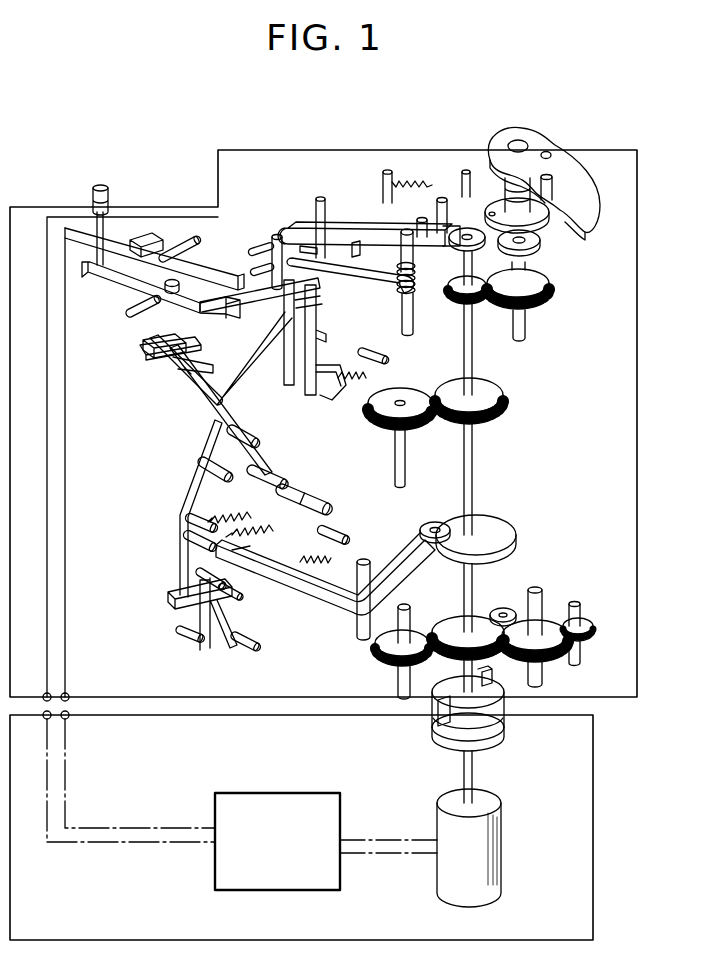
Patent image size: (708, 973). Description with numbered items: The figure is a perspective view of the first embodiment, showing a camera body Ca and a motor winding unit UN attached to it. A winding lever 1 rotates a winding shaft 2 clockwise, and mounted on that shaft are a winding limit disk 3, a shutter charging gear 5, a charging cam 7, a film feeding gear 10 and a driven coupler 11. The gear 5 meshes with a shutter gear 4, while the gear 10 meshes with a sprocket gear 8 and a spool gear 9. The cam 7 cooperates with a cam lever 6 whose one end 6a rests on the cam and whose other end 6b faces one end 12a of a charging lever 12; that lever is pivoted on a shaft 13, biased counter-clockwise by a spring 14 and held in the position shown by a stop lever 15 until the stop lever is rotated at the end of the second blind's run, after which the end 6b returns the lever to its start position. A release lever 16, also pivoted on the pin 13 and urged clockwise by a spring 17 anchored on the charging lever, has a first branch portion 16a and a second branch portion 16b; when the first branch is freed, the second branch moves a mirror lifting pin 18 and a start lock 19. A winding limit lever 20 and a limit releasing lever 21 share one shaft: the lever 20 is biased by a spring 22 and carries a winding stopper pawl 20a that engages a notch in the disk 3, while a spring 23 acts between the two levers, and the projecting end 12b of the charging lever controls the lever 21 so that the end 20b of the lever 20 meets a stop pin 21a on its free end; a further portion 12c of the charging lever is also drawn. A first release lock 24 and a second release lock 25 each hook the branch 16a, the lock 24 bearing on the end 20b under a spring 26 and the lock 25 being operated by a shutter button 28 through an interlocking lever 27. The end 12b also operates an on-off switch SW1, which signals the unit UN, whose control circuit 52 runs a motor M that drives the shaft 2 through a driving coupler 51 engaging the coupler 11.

The winding lever 1 is at (587, 203).
The winding shaft 2 is at (467, 355).
The winding limit disk 3 is at (458, 242).
The shutter gear 4 is at (412, 410).
The shutter charging gear 5 is at (490, 400).
The cam lever 6 is at (337, 595).
The one end of cam lever 6a is at (427, 532).
The other end of cam lever 6b is at (232, 550).
The charging cam 7 is at (502, 542).
The sprocket gear 8 is at (382, 643).
The spool gear 9 is at (552, 627).
The film feeding gear 10 is at (448, 622).
The driven coupler 11 is at (453, 693).
The charging lever 12 is at (197, 485).
The one end of charging lever 12a is at (187, 573).
The projecting end of charging lever 12b is at (273, 237).
The lever arm 12c is at (215, 458).
The shaft 13 is at (252, 438).
The spring 14 is at (283, 503).
The stop lever 15 is at (217, 607).
The release lever 16 is at (252, 400).
The first branch portion 16a is at (345, 391).
The second branch portion 16b is at (190, 372).
The spring 17 is at (280, 503).
The mirror lifting pin 18 is at (153, 326).
The start lock 19 is at (152, 355).
The winding limit lever 20 is at (367, 247).
The winding stopper pawl 20a is at (435, 237).
The one end of winding limit lever 20b is at (292, 228).
The limit releasing lever 21 is at (367, 283).
The pin 21a is at (318, 197).
The spring 22 is at (393, 187).
The spring 23 is at (417, 290).
The first release lock 24 is at (325, 335).
The second release lock 25 is at (305, 305).
The spring 26 is at (368, 372).
The interlocking lever 27 is at (106, 280).
The shutter button 28 is at (100, 185).
The driving coupler 51 is at (485, 742).
The control circuit 52 is at (277, 880).
The on-off switch SW1 is at (212, 260).
The camera body Ca is at (627, 638).
The motor winding unit UN is at (582, 898).
The motor M is at (487, 862).